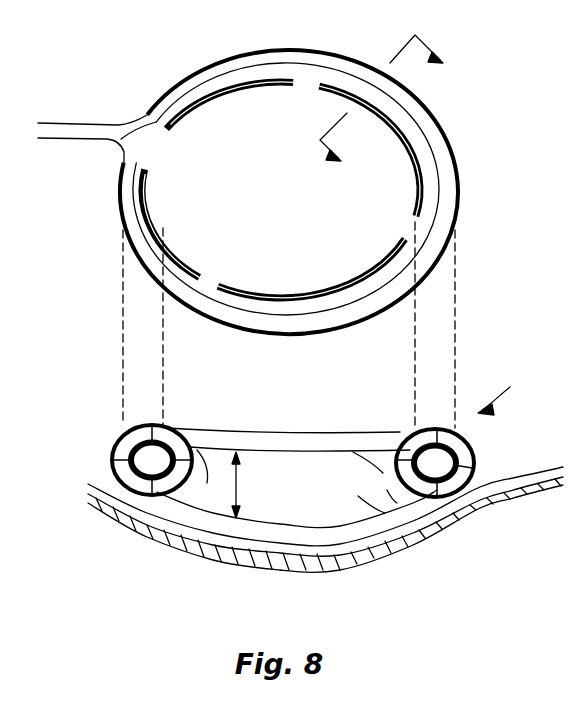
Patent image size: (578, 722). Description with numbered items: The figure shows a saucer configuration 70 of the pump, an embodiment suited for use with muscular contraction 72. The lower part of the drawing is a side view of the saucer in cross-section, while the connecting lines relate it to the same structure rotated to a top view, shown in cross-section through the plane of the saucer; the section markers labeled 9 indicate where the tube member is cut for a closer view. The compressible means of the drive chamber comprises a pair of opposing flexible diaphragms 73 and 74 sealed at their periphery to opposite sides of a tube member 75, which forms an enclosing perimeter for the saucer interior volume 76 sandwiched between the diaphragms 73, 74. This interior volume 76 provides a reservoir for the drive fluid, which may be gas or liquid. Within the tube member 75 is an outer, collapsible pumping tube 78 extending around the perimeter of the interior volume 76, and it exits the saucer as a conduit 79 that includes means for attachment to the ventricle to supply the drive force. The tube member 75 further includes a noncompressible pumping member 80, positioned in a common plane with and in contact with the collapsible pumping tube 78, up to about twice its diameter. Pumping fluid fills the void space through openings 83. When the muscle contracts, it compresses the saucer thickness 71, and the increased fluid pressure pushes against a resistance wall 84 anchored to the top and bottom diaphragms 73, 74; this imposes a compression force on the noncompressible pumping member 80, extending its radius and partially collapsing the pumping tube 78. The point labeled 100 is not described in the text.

The section line for FIG. 9 is at (392, 107).
The saucer configuration 70 is at (513, 394).
The saucer thickness 71 is at (233, 487).
The muscular contraction 72 is at (500, 503).
The flexible diaphragm 73 is at (302, 443).
The flexible diaphragm 74 is at (310, 533).
The tube member 75 is at (457, 137).
The saucer interior volume 76 is at (267, 485).
The collapsible pumping tube 78 is at (287, 50).
The conduit 79 is at (133, 123).
The noncompressible pumping member 80 is at (313, 70).
The openings 83 is at (412, 228).
The resistance wall 84 is at (417, 175).
The attachment ring 100 is at (473, 450).